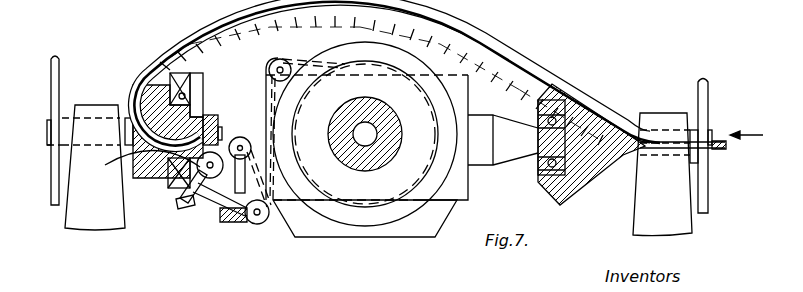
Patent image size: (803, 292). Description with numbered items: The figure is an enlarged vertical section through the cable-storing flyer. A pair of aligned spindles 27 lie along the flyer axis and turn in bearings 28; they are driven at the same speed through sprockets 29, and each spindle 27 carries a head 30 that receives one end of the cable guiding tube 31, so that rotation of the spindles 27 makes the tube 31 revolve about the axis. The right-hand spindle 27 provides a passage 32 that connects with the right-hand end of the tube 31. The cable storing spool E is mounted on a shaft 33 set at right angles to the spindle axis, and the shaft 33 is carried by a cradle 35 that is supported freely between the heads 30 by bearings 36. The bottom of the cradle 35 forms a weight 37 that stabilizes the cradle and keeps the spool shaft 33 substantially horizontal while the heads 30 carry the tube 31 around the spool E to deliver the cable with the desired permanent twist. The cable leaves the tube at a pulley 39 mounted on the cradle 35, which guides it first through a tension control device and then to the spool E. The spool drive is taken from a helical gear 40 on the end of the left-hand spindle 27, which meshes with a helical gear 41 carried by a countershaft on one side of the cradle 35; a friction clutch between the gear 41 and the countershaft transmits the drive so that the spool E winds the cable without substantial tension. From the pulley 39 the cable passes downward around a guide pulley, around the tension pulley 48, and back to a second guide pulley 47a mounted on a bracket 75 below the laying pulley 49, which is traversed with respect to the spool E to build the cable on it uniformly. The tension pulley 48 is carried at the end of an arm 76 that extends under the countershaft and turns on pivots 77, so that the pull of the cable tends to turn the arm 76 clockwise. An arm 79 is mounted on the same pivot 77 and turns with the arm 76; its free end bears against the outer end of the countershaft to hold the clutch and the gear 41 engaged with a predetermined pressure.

The spindle 27 is at (712, 163).
The bearing 28 is at (80, 106).
The sprocket 29 is at (58, 62).
The head 30 is at (136, 87).
The cable guiding tube 31 is at (490, 40).
The passage 32 is at (590, 113).
The shaft 33 is at (362, 147).
The cradle 35 is at (462, 192).
The bearing 36 is at (186, 183).
The weight 37 is at (403, 230).
The pulley 39 is at (239, 134).
The helical gear 40 is at (210, 117).
The helical gear 41 is at (212, 180).
The second guide pulley 47a is at (262, 218).
The tension pulley 48 is at (233, 228).
The laying pulley 49 is at (286, 67).
The bracket 75 is at (252, 226).
The arm 76 is at (204, 202).
The pivot 77 is at (198, 204).
The arm 79 is at (141, 168).
The cable storing spool E is at (360, 100).